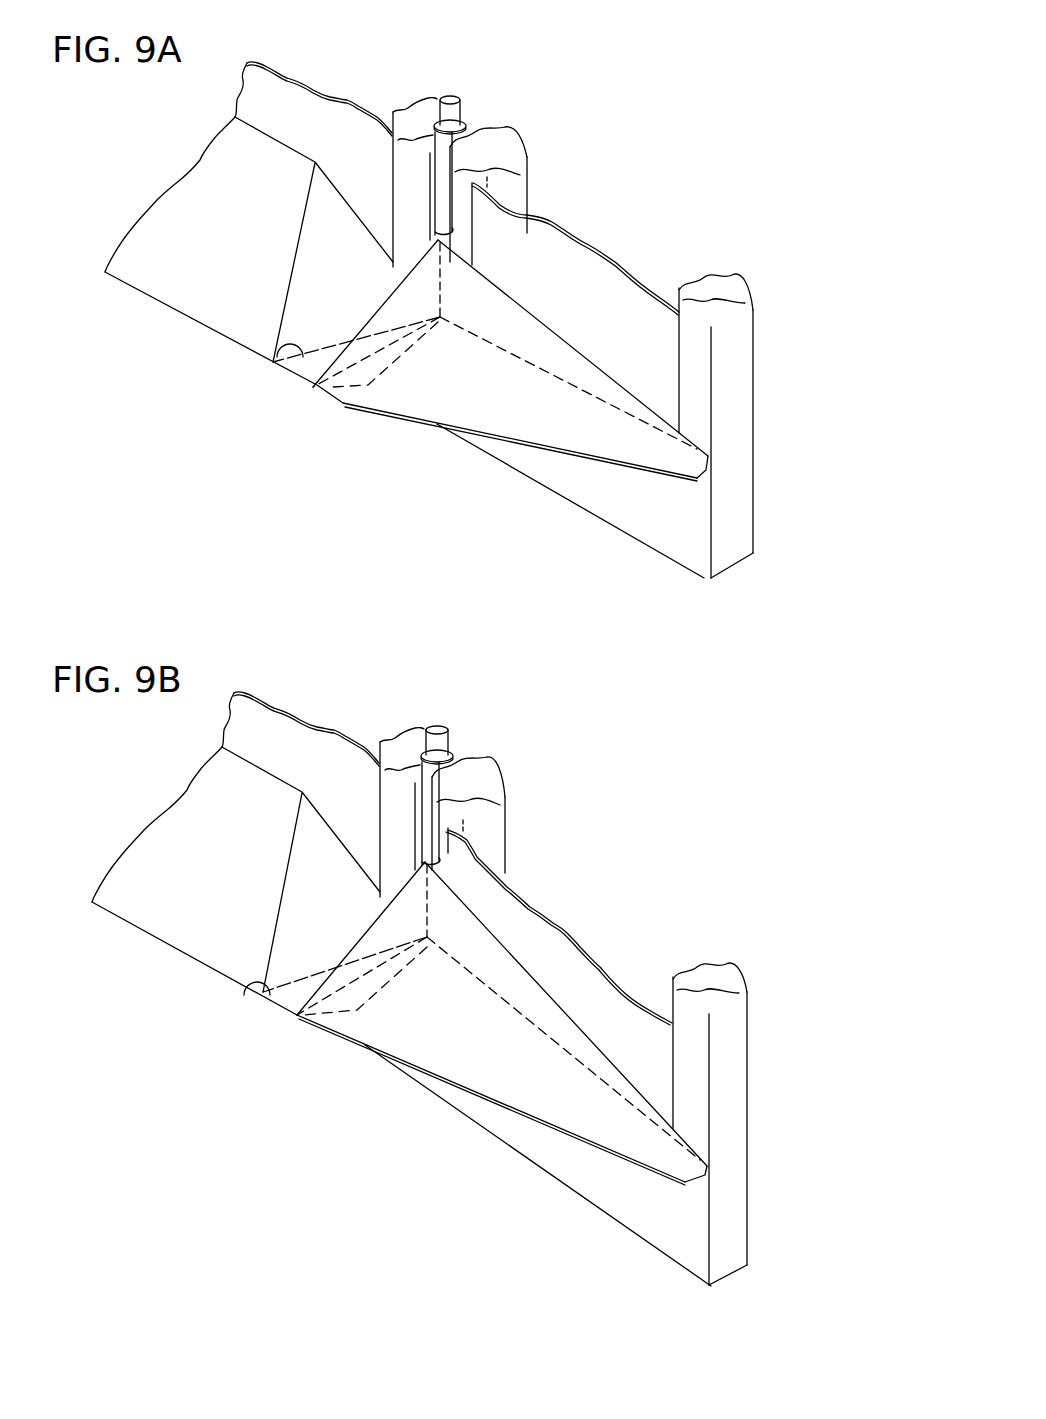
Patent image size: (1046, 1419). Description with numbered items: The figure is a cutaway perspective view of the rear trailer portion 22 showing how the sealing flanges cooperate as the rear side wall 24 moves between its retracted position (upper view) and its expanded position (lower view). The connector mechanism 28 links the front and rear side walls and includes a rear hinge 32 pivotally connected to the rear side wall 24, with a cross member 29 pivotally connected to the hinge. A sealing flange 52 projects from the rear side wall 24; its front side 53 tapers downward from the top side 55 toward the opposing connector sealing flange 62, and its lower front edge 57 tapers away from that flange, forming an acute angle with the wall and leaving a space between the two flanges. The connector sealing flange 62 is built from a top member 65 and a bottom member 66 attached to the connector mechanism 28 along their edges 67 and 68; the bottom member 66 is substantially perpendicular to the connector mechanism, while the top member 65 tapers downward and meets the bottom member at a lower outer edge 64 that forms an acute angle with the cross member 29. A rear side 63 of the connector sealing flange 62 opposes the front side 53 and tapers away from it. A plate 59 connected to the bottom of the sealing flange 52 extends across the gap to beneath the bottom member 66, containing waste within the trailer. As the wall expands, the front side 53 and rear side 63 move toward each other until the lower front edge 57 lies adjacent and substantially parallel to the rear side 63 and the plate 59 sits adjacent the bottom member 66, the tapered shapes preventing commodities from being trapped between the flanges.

In FIG. 9A, the rear trailer portion 22 is at (322, 78).
In FIG. 9B, the rear trailer portion 22 is at (307, 700).
In FIG. 9A, the rear side wall 24 is at (323, 138).
In FIG. 9B, the rear side wall 24 is at (320, 775).
In FIG. 9A, the connector mechanism 28 is at (580, 220).
In FIG. 9B, the connector mechanism 28 is at (567, 903).
In FIG. 9A, the cross member 29 is at (610, 320).
In FIG. 9B, the cross member 29 is at (594, 995).
In FIG. 9A, the rear hinge 32 is at (452, 93).
In FIG. 9B, the rear hinge 32 is at (445, 730).
In FIG. 9A, the sealing flange 52 is at (140, 290).
In FIG. 9B, the sealing flange 52 is at (125, 925).
In FIG. 9A, the front side 53 is at (305, 285).
In FIG. 9B, the front side 53 is at (290, 907).
In FIG. 9A, the top side 55 is at (217, 285).
In FIG. 9B, the top side 55 is at (203, 922).
In FIG. 9A, the lower front edge 57 is at (305, 355).
In FIG. 9B, the lower front edge 57 is at (273, 990).
In FIG. 9A, the plate 59 is at (306, 368).
In FIG. 9B, the plate 59 is at (270, 997).
In FIG. 9A, the connector sealing flange 62 is at (445, 427).
In FIG. 9B, the connector sealing flange 62 is at (442, 1080).
In FIG. 9A, the rear side 63 is at (372, 343).
In FIG. 9B, the rear side 63 is at (350, 948).
In FIG. 9A, the lower outer edge 64 is at (417, 420).
In FIG. 9B, the lower outer edge 64 is at (407, 1062).
In FIG. 9A, the top member 65 is at (549, 354).
In FIG. 9B, the top member 65 is at (512, 982).
In FIG. 9A, the bottom member 66 is at (597, 435).
In FIG. 9B, the bottom member 66 is at (546, 1090).
In FIG. 9A, the edge 67 is at (649, 406).
In FIG. 9B, the edge 67 is at (616, 1065).
In FIG. 9A, the edge 68 is at (674, 451).
In FIG. 9B, the edge 68 is at (665, 1138).